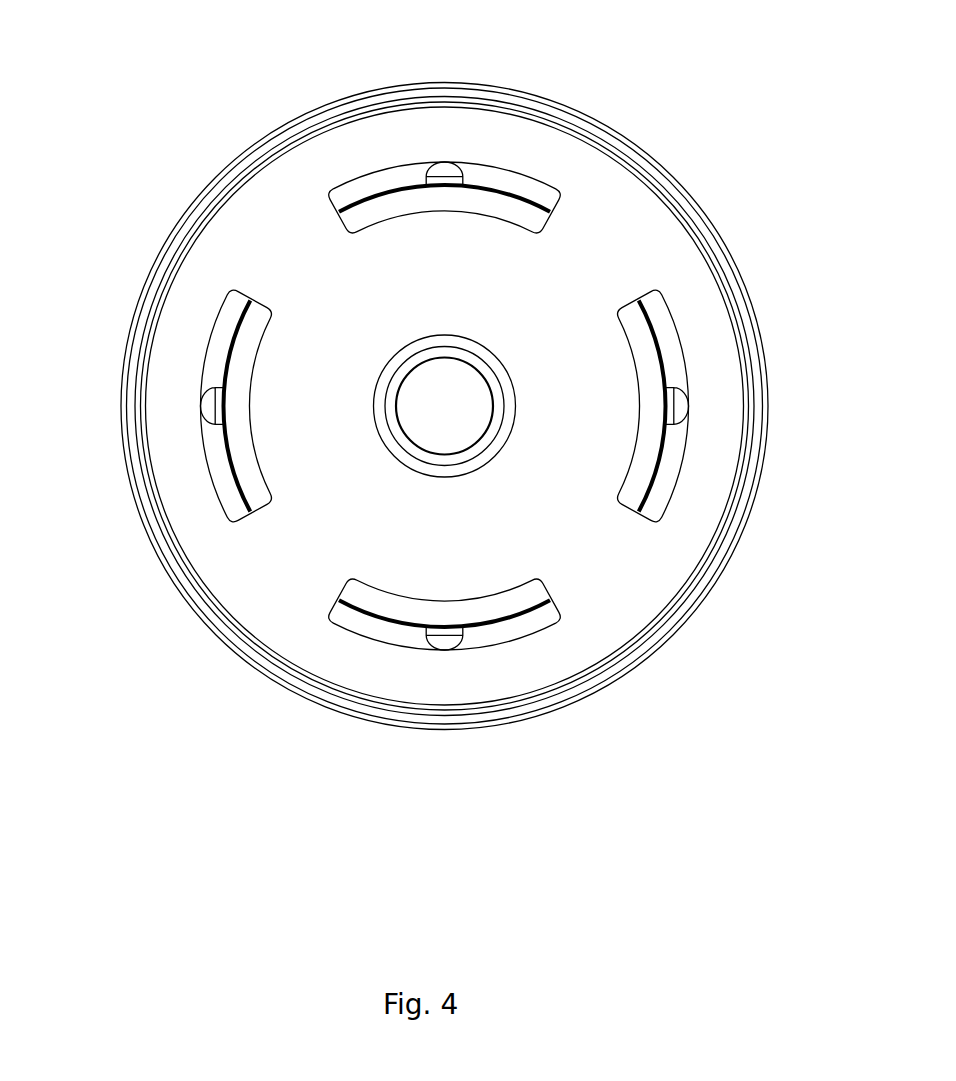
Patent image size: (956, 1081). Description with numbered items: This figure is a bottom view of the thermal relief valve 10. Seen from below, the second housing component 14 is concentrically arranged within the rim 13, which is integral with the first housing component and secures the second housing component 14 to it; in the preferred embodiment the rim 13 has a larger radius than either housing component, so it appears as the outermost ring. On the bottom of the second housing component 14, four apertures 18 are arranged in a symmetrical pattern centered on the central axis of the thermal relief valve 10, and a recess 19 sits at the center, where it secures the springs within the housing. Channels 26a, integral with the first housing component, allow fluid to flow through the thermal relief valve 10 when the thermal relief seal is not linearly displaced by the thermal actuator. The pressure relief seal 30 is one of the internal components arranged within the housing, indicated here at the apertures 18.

The thermal relief valve 10 is at (613, 50).
The rim 13 is at (690, 185).
The second housing component 14 is at (267, 152).
The apertures 18 is at (377, 188).
The recess 19 is at (493, 437).
The channels 26a is at (446, 174).
The pressure relief seal 30 is at (642, 462).